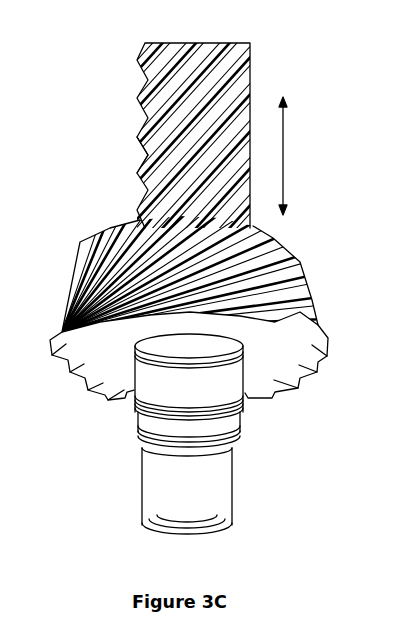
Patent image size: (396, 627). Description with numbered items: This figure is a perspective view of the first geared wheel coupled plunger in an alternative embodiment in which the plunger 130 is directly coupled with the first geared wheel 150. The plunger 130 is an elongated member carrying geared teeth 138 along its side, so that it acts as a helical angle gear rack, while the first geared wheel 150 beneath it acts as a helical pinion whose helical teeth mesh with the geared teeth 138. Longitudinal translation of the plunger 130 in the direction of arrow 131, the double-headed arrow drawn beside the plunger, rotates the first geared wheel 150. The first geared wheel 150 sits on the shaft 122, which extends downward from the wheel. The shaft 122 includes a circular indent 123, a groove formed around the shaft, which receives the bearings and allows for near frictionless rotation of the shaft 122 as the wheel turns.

The plunger 130 is at (251, 70).
The arrow 131 is at (284, 150).
The geared teeth 138 is at (154, 150).
The first geared wheel 150 is at (125, 272).
The shaft 122 is at (165, 500).
The circular indent 123 is at (235, 447).